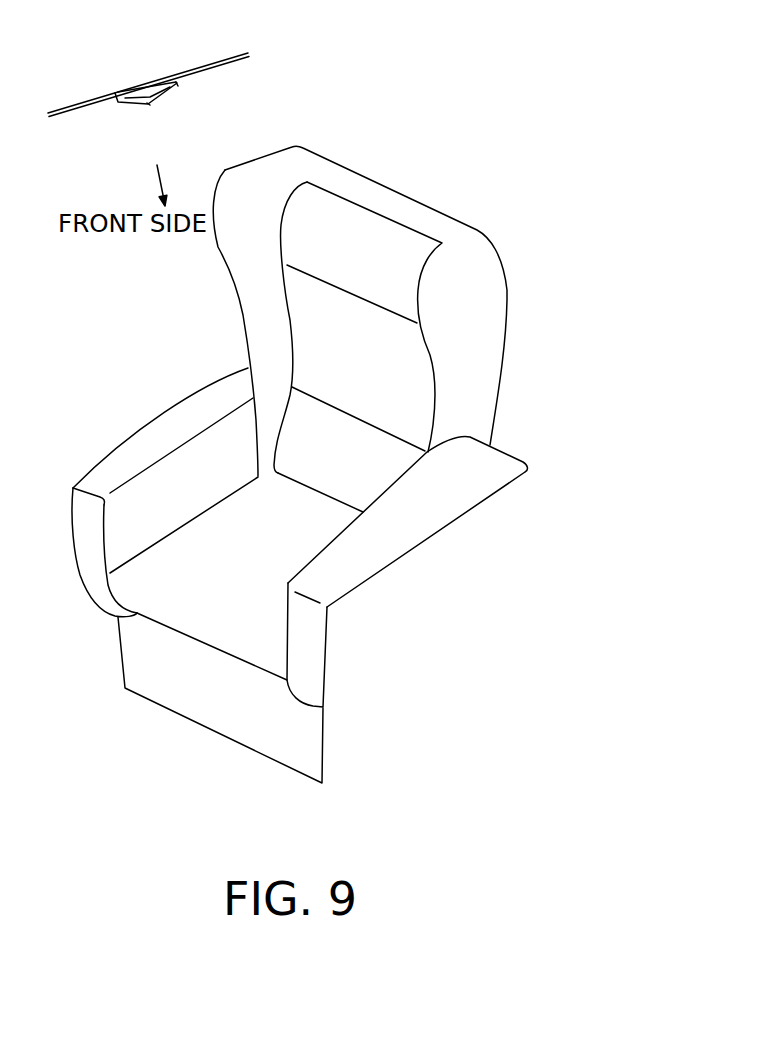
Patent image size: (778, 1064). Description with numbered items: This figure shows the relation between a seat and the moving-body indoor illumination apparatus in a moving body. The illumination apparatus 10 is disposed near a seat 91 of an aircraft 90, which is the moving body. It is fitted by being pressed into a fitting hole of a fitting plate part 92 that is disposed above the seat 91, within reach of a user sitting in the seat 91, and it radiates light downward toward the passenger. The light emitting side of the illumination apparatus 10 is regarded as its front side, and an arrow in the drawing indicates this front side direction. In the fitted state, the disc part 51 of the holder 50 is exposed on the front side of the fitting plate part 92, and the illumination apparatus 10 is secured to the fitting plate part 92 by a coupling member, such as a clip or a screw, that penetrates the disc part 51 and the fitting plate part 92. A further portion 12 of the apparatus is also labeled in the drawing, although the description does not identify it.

The illumination apparatus 10 is at (182, 84).
The detection unit 12 is at (150, 104).
The holder 50 is at (127, 102).
The disc part 51 is at (140, 86).
The aircraft 90 is at (391, 89).
The seat 91 is at (422, 202).
The fitting plate part 92 is at (72, 110).